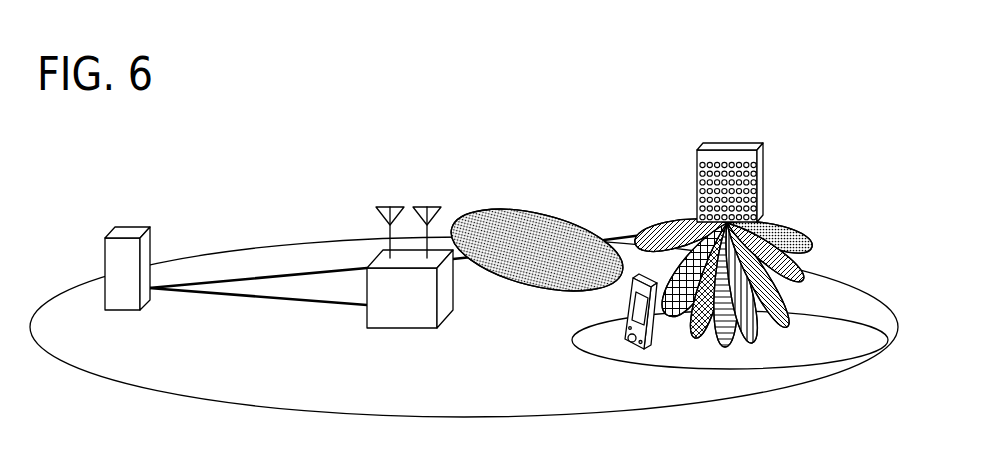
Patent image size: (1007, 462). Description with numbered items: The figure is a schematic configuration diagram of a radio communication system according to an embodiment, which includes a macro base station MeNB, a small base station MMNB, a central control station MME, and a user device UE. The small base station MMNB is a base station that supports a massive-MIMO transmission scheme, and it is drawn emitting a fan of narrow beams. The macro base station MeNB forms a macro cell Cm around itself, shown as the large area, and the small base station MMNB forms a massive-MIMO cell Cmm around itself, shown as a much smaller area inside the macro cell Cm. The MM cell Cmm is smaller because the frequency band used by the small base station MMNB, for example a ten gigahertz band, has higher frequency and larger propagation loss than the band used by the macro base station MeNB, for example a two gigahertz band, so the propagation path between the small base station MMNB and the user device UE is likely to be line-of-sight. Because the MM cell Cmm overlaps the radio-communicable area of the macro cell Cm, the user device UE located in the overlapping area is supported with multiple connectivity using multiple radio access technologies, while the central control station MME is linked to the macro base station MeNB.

The central control station MME is at (135, 227).
The macro base station MeNB is at (375, 258).
The user device UE is at (627, 297).
The small base station MMNB is at (763, 185).
The macro cell Cm is at (840, 281).
The massive-MIMO cell Cmm is at (910, 304).